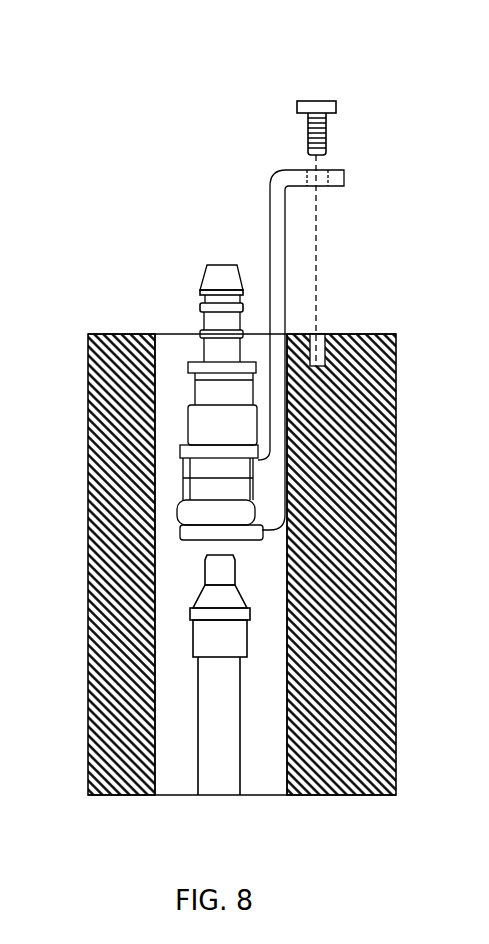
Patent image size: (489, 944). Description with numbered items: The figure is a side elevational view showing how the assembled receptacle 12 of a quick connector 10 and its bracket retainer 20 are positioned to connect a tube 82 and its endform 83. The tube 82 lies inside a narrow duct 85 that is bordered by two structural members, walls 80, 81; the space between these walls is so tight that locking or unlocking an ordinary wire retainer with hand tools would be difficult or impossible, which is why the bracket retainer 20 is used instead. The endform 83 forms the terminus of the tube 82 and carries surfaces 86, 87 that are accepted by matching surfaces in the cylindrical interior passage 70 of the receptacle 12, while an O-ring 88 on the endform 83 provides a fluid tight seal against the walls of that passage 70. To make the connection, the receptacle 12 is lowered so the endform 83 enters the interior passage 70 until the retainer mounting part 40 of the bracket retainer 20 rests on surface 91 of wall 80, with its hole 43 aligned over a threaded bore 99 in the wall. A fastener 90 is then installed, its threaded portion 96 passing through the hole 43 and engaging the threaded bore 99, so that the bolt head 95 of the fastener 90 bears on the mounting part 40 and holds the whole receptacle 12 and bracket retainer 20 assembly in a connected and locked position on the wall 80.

The quick connector 10 is at (204, 228).
The receptacle 12 is at (202, 432).
The bracket retainer 20 is at (313, 334).
The retainer mounting part 40 is at (365, 206).
The hole 43 is at (320, 188).
The interior passage 70 is at (222, 540).
The wall 80 is at (252, 500).
The wall 81 is at (88, 392).
The tube 82 is at (242, 675).
The endform 83 is at (170, 575).
The duct 85 is at (262, 772).
The surface 86 is at (243, 598).
The surface 87 is at (233, 575).
The O-ring 88 is at (195, 617).
The fastener 90 is at (364, 86).
The surface 91 is at (372, 334).
The screw head 95 is at (336, 108).
The threaded portion 96 is at (326, 140).
The threaded bore 99 is at (320, 334).